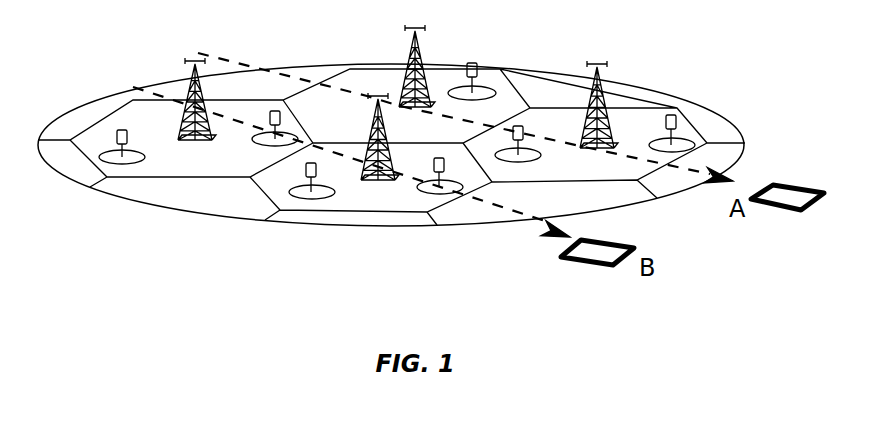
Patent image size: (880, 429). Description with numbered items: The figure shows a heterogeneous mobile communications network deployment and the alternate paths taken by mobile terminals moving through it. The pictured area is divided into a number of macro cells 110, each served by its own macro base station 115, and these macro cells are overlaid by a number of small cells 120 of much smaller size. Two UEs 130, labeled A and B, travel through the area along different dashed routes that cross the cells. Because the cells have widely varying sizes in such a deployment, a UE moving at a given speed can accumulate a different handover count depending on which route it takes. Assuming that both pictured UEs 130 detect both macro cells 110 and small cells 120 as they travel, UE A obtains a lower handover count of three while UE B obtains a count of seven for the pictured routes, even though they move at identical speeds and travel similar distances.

The macro cell 110 is at (204, 163).
The macro base station 115 is at (188, 92).
The small cell 120 is at (114, 163).
The UE 130 is at (580, 265).